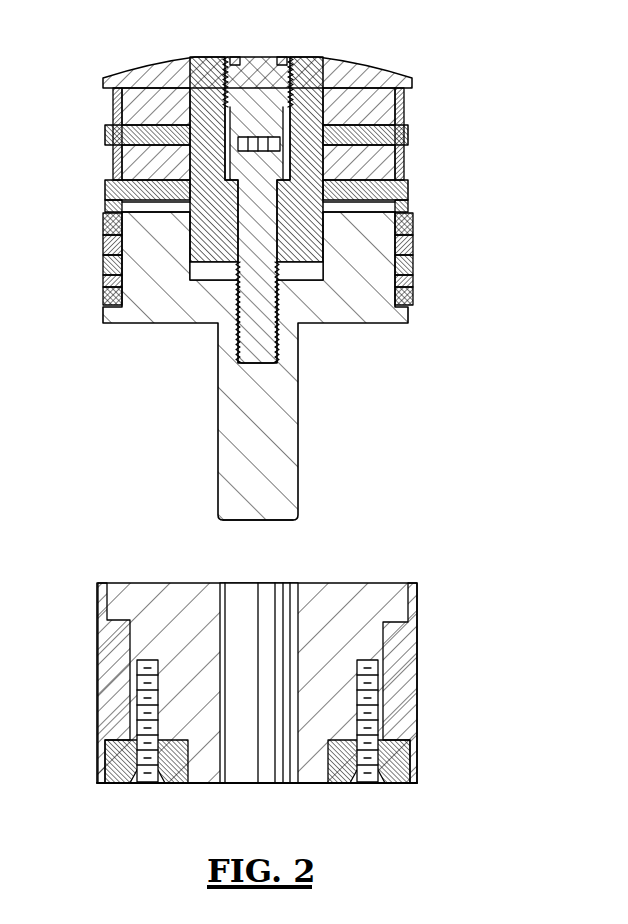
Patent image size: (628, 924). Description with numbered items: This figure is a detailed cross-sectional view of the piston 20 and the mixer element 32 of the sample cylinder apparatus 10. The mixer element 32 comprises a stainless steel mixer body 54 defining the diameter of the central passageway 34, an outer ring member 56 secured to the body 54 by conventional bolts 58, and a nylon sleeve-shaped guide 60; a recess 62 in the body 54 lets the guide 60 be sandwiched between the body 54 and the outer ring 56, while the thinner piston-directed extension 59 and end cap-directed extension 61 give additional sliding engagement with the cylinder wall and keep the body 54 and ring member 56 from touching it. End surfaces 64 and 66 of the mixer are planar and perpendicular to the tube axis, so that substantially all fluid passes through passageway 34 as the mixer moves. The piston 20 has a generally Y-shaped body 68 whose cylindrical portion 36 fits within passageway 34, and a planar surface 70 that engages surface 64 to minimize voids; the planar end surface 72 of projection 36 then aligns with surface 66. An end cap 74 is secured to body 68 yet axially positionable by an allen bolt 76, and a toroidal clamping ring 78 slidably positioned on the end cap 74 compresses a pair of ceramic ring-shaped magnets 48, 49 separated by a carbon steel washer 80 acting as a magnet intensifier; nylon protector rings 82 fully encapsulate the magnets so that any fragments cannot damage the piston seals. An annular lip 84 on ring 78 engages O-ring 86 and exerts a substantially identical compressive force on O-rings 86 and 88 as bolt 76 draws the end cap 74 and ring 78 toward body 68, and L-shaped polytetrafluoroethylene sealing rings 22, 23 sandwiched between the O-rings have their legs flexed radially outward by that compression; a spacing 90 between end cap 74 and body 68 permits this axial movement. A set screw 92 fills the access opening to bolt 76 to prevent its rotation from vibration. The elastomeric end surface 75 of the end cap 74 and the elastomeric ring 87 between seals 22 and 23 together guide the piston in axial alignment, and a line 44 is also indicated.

The quick-connect coupling apparatus 10 is at (2, 372).
The piston 20 is at (84, 278).
The sealing ring 22 is at (105, 245).
The sealing ring 23 is at (105, 268).
The mixer element 32 is at (88, 595).
The central passageway 34 is at (256, 675).
The cylindrical portion 36 is at (270, 458).
The line 44 is at (13, 50).
The ceramic ring-shaped magnet 48 is at (120, 108).
The ceramic ring-shaped magnet 49 is at (403, 163).
The mixer body 54 is at (370, 598).
The outer ring member 56 is at (417, 773).
The bolt 58 is at (97, 782).
The piston-directed extension 59 is at (412, 617).
The sleeve-shaped guide 60 is at (417, 687).
The end cap-directed extension 61 is at (415, 760).
The recess 62 is at (107, 643).
The end surface 64 is at (160, 583).
The end surface 66 is at (200, 783).
The piston body 68 is at (352, 297).
The planar surface 70 is at (380, 323).
The planar end surface 72 is at (287, 520).
The end cap 74 is at (343, 62).
The end surface 75 is at (413, 82).
The allen bolt 76 is at (225, 260).
The clamping ring 78 is at (107, 190).
The washer 80 is at (410, 133).
The protector ring 82 is at (402, 110).
The annular lip 84 is at (107, 207).
The O-ring 86 is at (413, 228).
The elastomeric ring 87 is at (413, 262).
The O-ring 88 is at (413, 297).
The spacing 90 is at (303, 272).
The set screw 92 is at (242, 85).